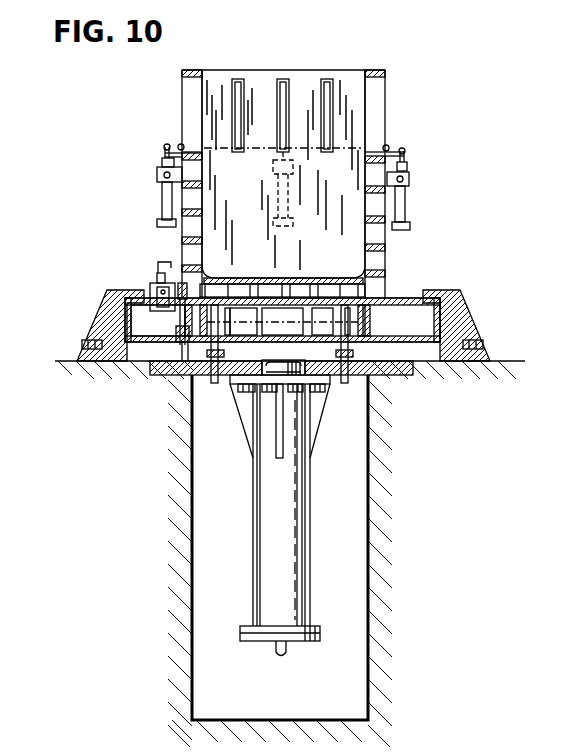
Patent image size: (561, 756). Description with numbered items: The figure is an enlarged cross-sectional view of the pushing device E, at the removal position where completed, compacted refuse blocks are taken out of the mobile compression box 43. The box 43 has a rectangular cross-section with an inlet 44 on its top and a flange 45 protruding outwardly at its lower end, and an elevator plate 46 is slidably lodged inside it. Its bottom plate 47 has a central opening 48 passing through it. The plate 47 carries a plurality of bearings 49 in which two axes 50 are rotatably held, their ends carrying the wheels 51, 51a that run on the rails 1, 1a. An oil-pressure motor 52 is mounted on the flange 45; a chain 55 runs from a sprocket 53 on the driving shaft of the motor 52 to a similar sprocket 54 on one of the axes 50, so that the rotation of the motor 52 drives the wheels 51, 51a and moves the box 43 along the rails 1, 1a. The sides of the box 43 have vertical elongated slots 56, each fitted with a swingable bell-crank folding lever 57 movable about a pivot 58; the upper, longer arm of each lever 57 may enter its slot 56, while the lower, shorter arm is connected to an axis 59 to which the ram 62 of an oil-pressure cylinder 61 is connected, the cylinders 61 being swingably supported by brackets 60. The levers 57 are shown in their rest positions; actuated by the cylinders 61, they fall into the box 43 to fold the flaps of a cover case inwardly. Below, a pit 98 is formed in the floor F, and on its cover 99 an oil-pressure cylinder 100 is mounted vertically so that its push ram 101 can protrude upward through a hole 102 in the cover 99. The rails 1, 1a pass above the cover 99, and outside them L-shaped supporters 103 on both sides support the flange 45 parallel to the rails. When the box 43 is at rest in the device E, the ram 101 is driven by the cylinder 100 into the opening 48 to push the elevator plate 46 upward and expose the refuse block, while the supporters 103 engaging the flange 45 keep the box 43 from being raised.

The pushing device E is at (52, 170).
The floor F is at (510, 361).
The rail 1 is at (347, 401).
The rail 1a is at (209, 401).
The mobile compression box 43 is at (282, 165).
The inlet 44 is at (304, 90).
The flange 45 is at (130, 307).
The elevator plate 46 is at (285, 300).
The bottom plate 47 is at (250, 340).
The opening 48 is at (290, 340).
The bearings 49 is at (222, 322).
The axes 50 is at (195, 340).
The wheel 51 is at (344, 336).
The wheel 51a is at (218, 340).
The oil-pressure motor 52 is at (150, 290).
The sprocket 53 is at (179, 283).
The sprocket 54 is at (183, 343).
The chain 55 is at (178, 312).
The vertical elongated slots 56 is at (281, 96).
The folding lever 57 is at (209, 93).
The pivot 58 is at (180, 143).
The axis 59 is at (164, 148).
The bracket 60 is at (157, 176).
The oil-pressure cylinder 61 is at (162, 201).
The ram 62 is at (161, 162).
The pit 98 is at (194, 549).
The cover 99 is at (356, 378).
The oil-pressure cylinder 100 is at (300, 549).
The push ram 101 is at (272, 393).
The hole 102 is at (318, 393).
The supporters 103 is at (108, 313).